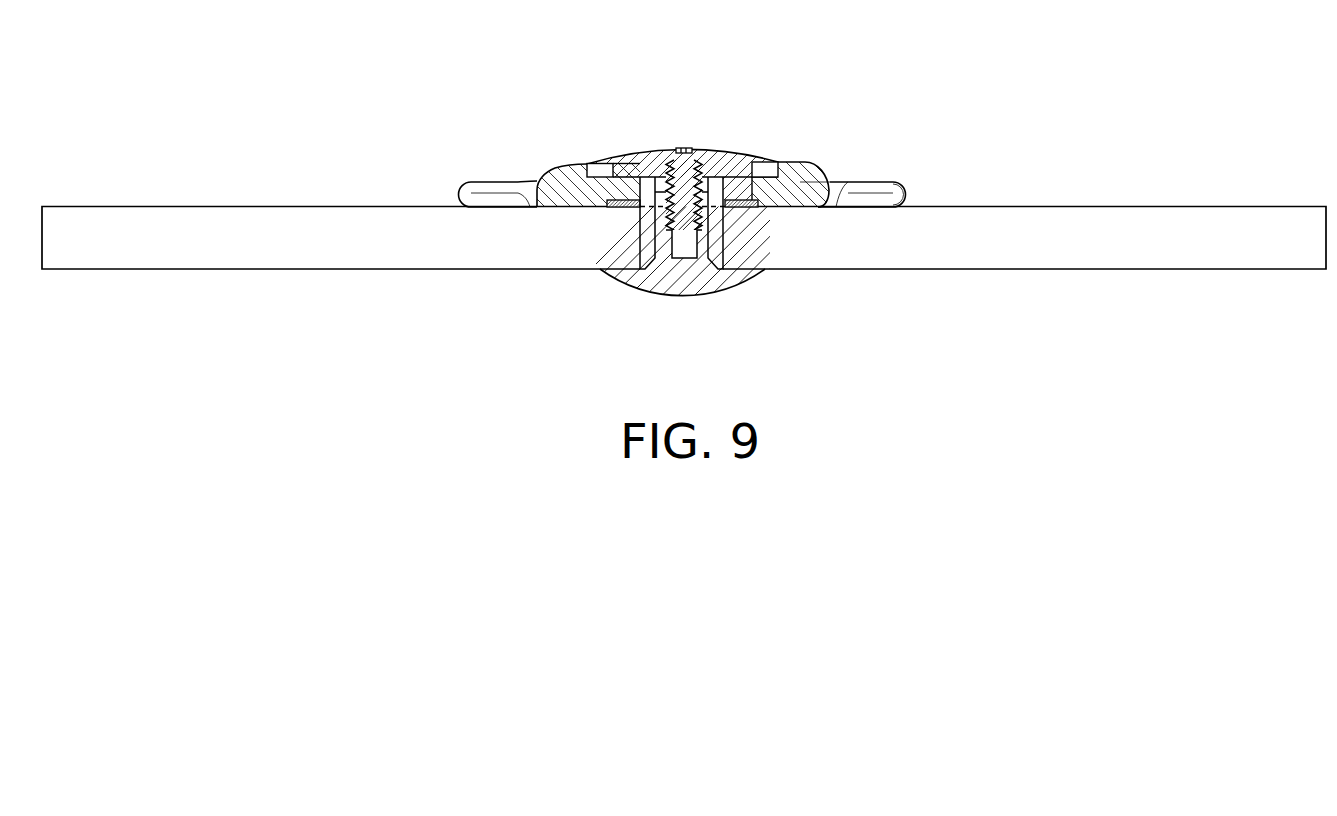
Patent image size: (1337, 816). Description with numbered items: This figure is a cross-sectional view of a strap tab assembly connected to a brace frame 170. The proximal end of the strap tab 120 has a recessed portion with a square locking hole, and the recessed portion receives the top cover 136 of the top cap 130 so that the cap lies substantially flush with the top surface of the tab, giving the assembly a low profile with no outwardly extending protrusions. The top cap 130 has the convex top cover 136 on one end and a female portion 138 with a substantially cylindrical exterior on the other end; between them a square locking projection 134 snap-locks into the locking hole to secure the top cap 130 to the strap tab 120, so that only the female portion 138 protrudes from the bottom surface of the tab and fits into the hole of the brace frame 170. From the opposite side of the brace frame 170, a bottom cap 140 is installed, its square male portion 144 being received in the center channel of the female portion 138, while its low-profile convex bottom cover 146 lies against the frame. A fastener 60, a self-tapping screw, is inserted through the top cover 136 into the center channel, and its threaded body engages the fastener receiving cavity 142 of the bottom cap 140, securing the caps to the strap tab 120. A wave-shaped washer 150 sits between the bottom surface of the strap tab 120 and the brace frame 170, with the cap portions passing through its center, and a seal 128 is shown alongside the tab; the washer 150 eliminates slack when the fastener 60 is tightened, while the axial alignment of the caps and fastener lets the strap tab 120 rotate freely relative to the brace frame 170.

The screw 60 is at (676, 150).
The strap tab 120 is at (907, 180).
The gasket 128 is at (833, 176).
The top cap 130 is at (733, 147).
The locking projection 134 is at (640, 198).
The top cover 136 is at (648, 168).
The female portion 138 is at (650, 225).
The bottom cap 140 is at (643, 296).
The fastener receiving cavity 142 is at (686, 255).
The male portion 144 is at (703, 233).
The bottom cover 146 is at (719, 282).
The washer 150 is at (747, 197).
The brace frame 170 is at (1120, 207).